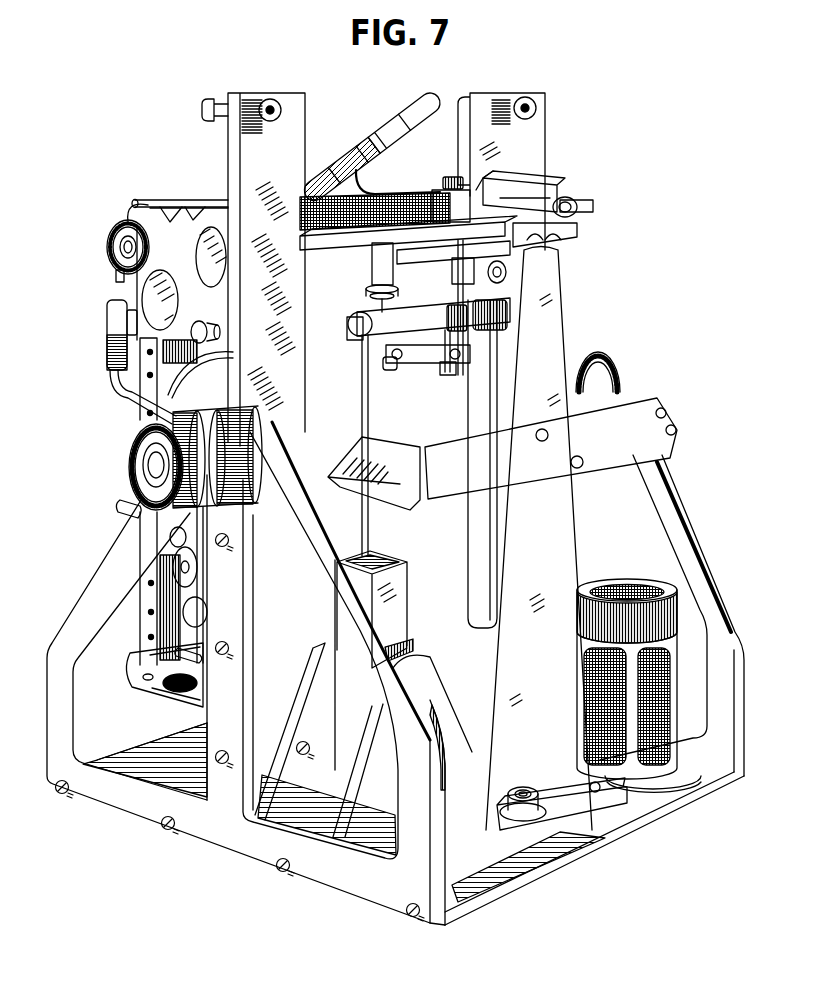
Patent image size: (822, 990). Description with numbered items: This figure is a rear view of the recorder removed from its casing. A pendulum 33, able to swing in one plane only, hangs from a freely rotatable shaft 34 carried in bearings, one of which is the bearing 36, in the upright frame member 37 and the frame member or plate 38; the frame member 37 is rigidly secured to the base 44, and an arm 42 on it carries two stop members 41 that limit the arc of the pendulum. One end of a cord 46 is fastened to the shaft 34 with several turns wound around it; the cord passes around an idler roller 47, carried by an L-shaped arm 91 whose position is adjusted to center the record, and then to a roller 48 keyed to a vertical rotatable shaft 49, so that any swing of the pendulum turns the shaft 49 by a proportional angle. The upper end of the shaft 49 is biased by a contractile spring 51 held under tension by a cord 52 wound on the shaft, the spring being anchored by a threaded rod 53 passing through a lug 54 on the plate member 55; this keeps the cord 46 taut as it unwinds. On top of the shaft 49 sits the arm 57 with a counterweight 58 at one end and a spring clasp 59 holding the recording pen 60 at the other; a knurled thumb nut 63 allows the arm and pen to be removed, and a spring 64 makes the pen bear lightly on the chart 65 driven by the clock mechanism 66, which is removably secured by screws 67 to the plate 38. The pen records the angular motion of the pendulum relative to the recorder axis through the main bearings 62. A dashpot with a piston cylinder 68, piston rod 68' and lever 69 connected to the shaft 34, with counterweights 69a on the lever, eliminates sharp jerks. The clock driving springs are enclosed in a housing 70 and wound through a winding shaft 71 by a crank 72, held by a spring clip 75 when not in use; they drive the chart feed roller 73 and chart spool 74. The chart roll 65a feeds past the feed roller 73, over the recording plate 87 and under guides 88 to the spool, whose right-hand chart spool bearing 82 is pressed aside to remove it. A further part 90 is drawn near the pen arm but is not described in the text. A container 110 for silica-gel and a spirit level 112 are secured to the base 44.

The pendulum 33 is at (468, 555).
The rotatable shaft 34 is at (494, 318).
The bearing 36 is at (377, 352).
The upright frame member 37 is at (564, 303).
The frame member (plate) 38 is at (254, 100).
The stop members 41 is at (345, 458).
The arm 42 is at (650, 452).
The base 44 is at (152, 743).
The cord 46 is at (438, 278).
The idler roller 47 is at (367, 288).
The roller 48 is at (466, 270).
The vertical rotatable shaft 49 is at (447, 352).
The contractile spring 51 is at (512, 206).
The cord 52 is at (482, 188).
The threaded rod 53 is at (593, 206).
The lug 54 is at (573, 197).
The plate member 55 is at (578, 238).
The arm (pen arm) 57 is at (427, 190).
The counterweight 58 is at (554, 184).
The spring clasp 59 is at (364, 140).
The recording pen 60 is at (416, 102).
The recorder main bearings 62 is at (128, 464).
The knurled thumb nut 63 is at (452, 177).
The spring 64 is at (408, 221).
The chart 65 is at (147, 631).
The chart roll 65a is at (200, 607).
The clock mechanism 66 is at (440, 196).
The screws 67 is at (203, 113).
The piston cylinder 68 is at (404, 651).
The piston rod 68' is at (347, 445).
The lever 69 is at (428, 319).
The counterweights 69a is at (500, 270).
The housing 70 is at (173, 377).
The winding shaft 71 is at (120, 512).
The crank 72 is at (122, 390).
The chart feed roller 73 is at (127, 249).
The chart spool 74 is at (188, 647).
The spring clip 75 is at (106, 323).
The chart spool bearing 82 is at (137, 680).
The recording plate 87 is at (188, 225).
The guides 88 is at (140, 205).
The grip 90 is at (353, 154).
The L-shaped arm 91 is at (376, 262).
The container 110 is at (614, 584).
The spirit level 112 is at (523, 789).